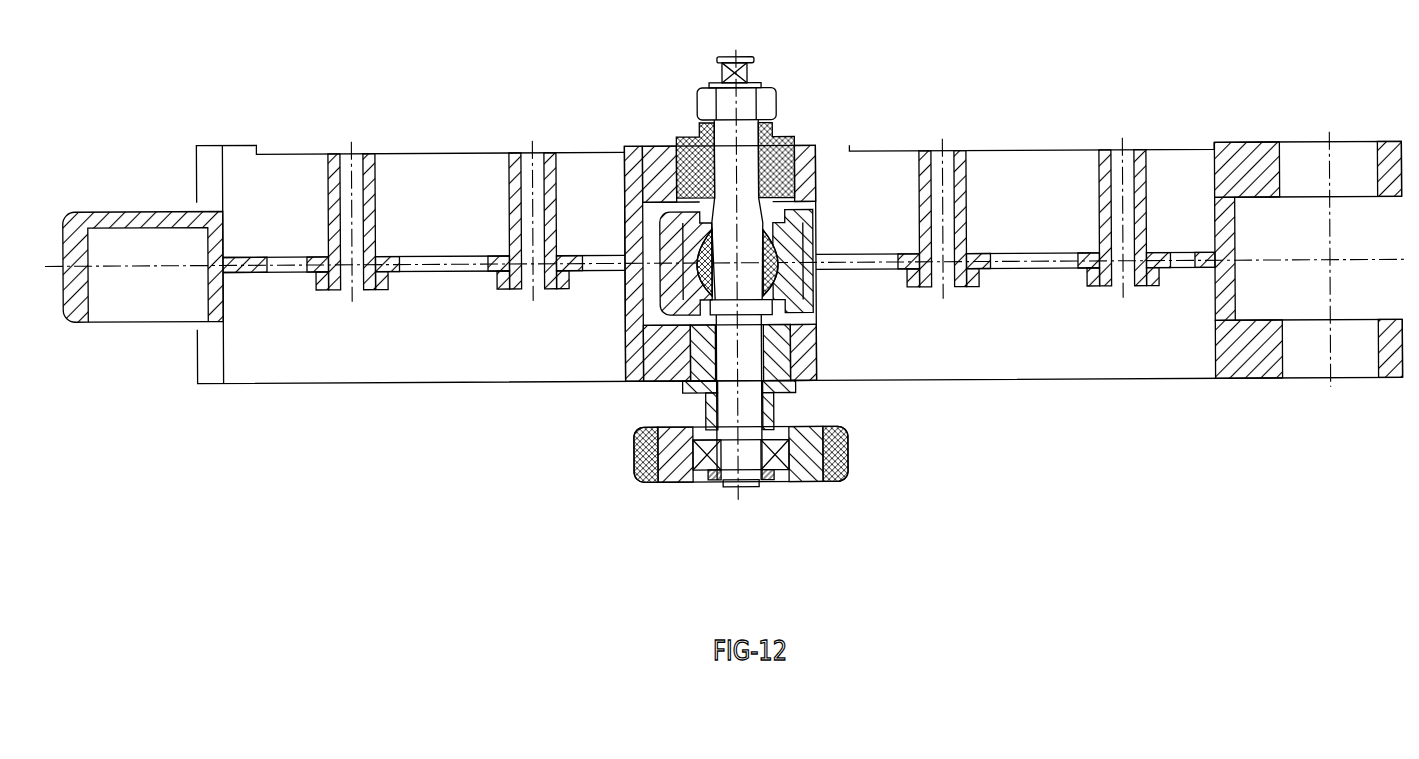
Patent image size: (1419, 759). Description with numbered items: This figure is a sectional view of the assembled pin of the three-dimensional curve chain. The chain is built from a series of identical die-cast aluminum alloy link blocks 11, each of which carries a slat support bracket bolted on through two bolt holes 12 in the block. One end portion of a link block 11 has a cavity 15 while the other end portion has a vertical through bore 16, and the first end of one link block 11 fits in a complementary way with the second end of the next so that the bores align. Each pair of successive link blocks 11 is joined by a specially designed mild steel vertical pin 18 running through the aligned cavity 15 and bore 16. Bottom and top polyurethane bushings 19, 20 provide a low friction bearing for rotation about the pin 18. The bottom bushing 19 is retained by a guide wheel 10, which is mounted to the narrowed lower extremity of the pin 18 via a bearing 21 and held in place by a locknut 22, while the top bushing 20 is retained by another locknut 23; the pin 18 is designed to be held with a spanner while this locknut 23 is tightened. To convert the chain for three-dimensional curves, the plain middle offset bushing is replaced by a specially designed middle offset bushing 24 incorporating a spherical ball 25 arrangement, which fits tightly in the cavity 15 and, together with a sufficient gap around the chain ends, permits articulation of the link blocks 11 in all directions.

The guide wheel 10 is at (848, 458).
The link block 11 is at (378, 382).
The bolt hole 12 is at (943, 149).
The cavity 15 is at (158, 284).
The vertical through bore 16 is at (1330, 155).
The vertical pin 18 is at (752, 58).
The bottom bushing 19 is at (800, 393).
The top bushing 20 is at (678, 137).
The bearing 21 is at (780, 466).
The locknut 22 is at (767, 484).
The locknut 23 is at (768, 97).
The middle offset bushing 24 is at (794, 297).
The spherical ball 25 is at (634, 312).